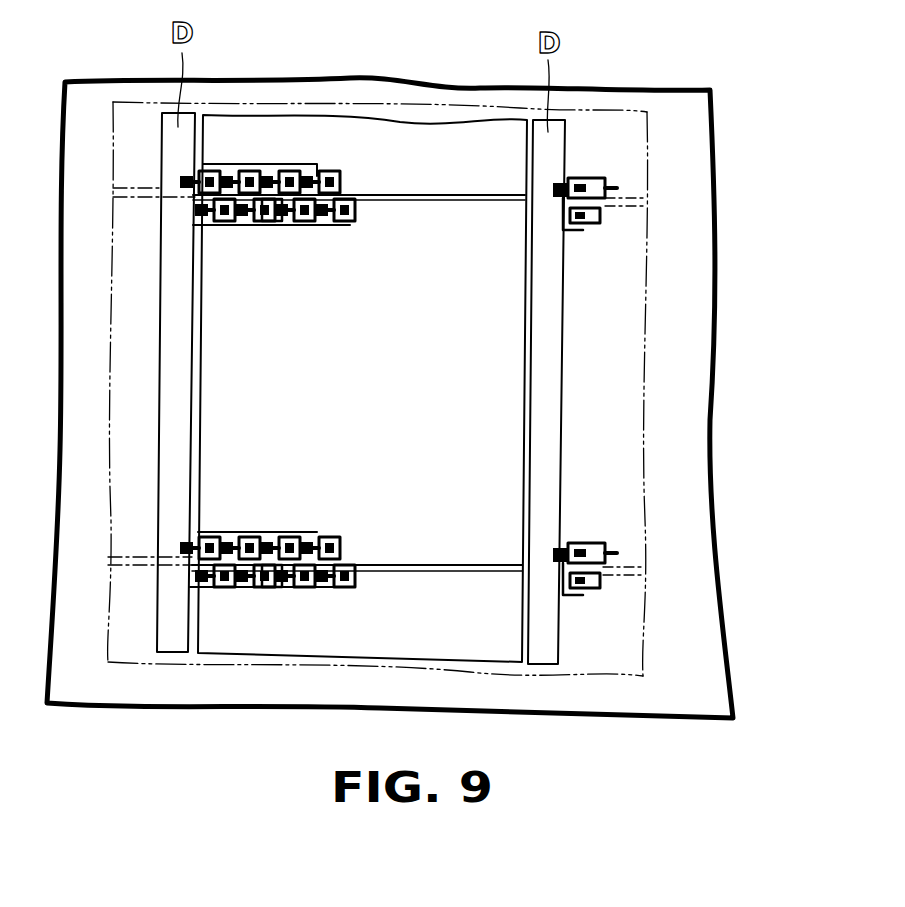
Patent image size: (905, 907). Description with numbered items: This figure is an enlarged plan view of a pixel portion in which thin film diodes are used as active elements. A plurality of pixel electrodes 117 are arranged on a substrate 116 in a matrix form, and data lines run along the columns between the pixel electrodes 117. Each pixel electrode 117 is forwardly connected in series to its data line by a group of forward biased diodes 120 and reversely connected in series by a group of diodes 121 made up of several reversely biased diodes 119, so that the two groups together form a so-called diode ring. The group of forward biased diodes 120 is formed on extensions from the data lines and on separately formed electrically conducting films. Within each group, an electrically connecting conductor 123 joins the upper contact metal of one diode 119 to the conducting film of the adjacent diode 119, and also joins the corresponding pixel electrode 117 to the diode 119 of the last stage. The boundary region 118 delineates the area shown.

The substrate 116 is at (702, 686).
The pixel electrode 117 is at (485, 140).
The region boundary 118 is at (633, 140).
The thin film diode 119 is at (210, 230).
The group of forward biased diodes 120 is at (332, 229).
The group of diodes 121 is at (335, 549).
The electrically connecting conductor 123 is at (270, 230).